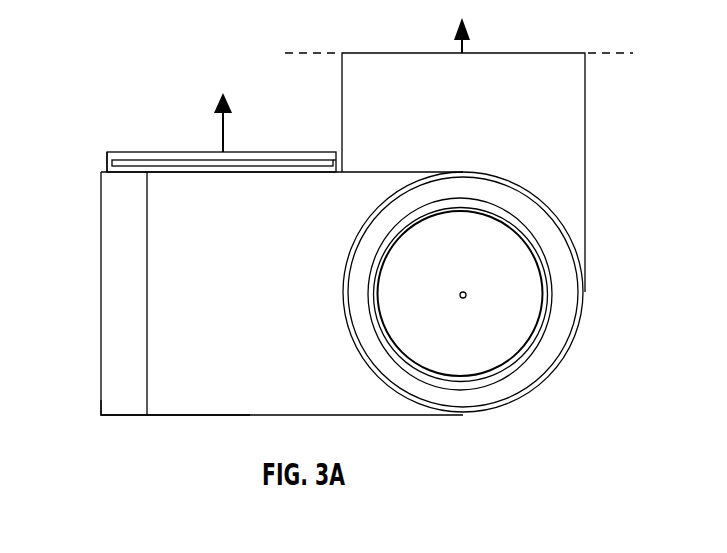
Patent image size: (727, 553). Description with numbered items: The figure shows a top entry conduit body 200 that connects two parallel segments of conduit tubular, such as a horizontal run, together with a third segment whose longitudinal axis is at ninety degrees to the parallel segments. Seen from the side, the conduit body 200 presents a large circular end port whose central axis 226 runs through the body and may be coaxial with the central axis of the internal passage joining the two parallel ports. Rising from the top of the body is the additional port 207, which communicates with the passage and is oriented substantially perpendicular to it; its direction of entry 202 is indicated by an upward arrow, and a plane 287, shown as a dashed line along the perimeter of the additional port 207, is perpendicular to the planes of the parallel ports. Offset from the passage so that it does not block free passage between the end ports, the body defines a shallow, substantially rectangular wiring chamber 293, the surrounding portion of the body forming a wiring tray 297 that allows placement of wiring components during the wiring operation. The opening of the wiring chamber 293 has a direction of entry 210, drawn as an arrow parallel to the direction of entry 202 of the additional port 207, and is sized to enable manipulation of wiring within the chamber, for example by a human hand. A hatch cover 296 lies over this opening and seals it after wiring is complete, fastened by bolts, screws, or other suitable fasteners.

The conduit body 200 is at (168, 63).
The direction of entry 202 is at (463, 42).
The additional port 207 is at (547, 32).
The direction of entry 210 is at (224, 122).
The central axis 226 is at (463, 298).
The plane 287 is at (318, 53).
The wiring chamber 293 is at (142, 134).
The hatch cover 296 is at (106, 153).
The wiring tray 297 is at (209, 420).